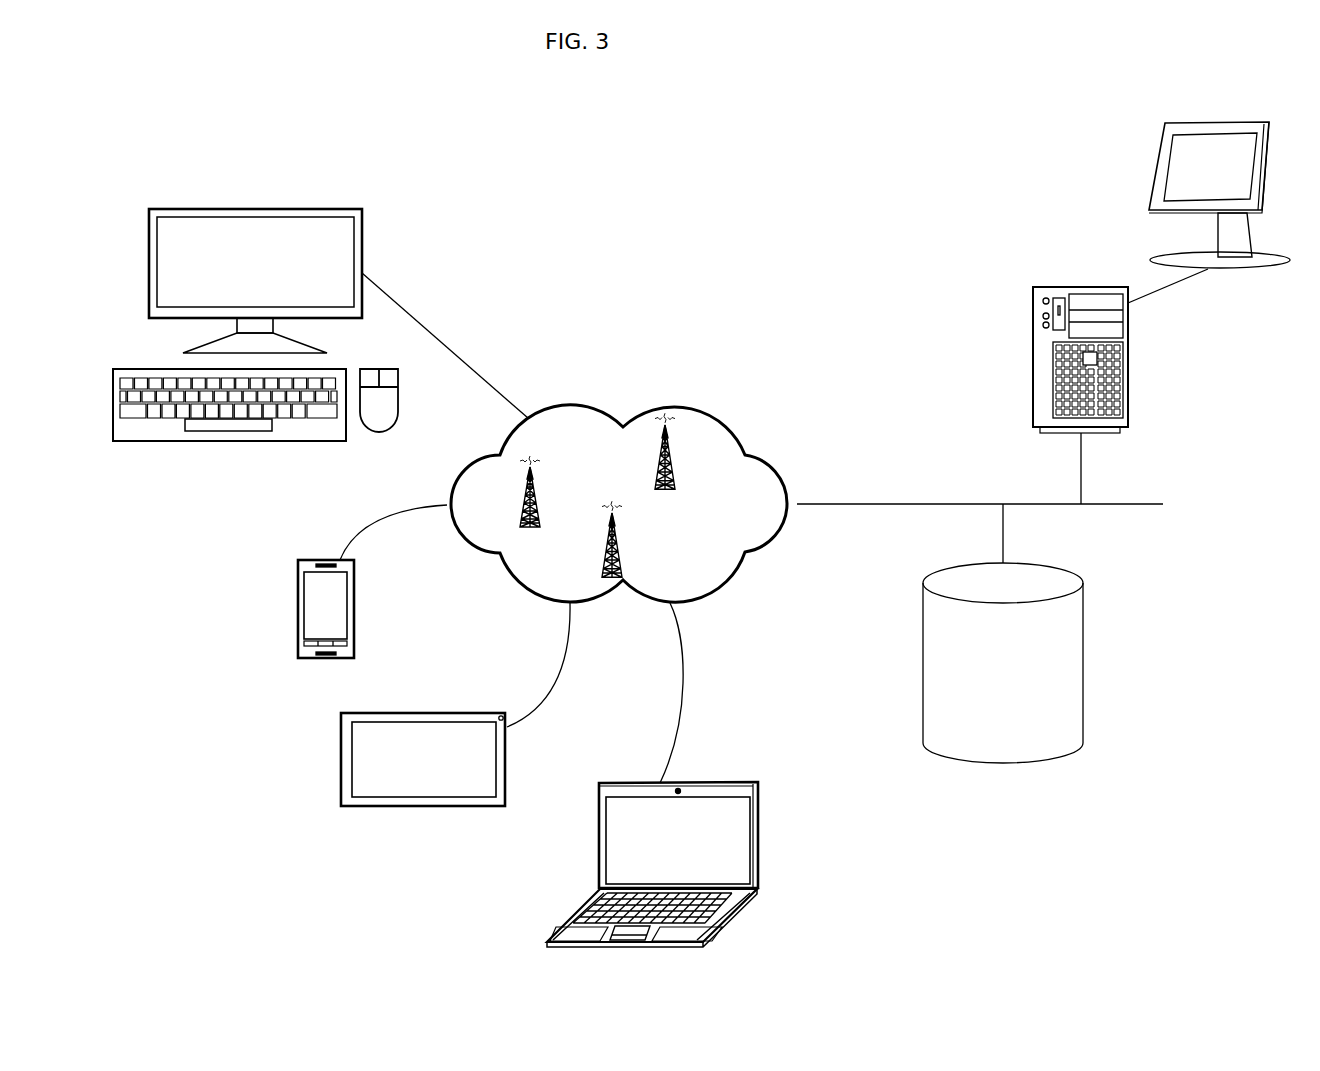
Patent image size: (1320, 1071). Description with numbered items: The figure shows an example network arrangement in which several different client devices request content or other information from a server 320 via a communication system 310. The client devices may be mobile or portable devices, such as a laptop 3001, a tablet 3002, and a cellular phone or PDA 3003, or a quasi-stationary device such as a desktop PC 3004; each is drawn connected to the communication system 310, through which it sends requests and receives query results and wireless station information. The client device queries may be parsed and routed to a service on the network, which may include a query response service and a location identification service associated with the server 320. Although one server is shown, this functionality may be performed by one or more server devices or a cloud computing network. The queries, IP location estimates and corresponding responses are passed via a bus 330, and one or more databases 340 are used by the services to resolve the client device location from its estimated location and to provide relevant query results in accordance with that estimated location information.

The desktop PC client device 3004 is at (320, 322).
The cellular phone or PDA client device 3003 is at (316, 581).
The tablet client device 3002 is at (398, 704).
The laptop client device 3001 is at (619, 775).
The communication system 310 is at (610, 413).
The server 320 is at (1128, 363).
The bus 330 is at (1163, 504).
The databases 340 is at (1083, 673).